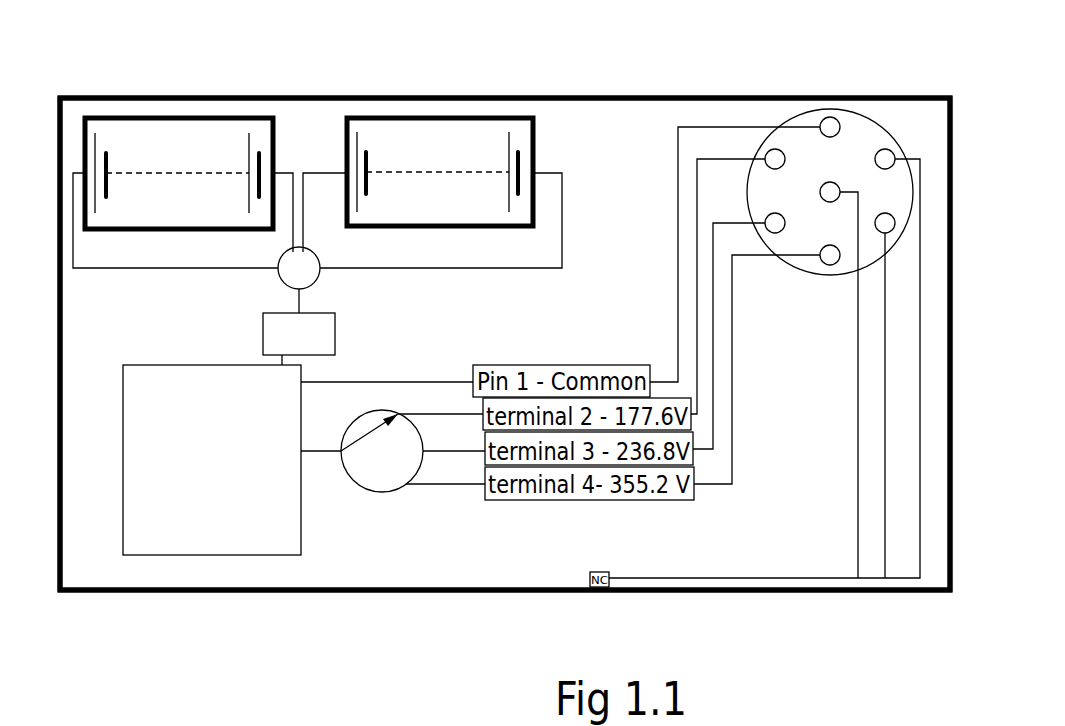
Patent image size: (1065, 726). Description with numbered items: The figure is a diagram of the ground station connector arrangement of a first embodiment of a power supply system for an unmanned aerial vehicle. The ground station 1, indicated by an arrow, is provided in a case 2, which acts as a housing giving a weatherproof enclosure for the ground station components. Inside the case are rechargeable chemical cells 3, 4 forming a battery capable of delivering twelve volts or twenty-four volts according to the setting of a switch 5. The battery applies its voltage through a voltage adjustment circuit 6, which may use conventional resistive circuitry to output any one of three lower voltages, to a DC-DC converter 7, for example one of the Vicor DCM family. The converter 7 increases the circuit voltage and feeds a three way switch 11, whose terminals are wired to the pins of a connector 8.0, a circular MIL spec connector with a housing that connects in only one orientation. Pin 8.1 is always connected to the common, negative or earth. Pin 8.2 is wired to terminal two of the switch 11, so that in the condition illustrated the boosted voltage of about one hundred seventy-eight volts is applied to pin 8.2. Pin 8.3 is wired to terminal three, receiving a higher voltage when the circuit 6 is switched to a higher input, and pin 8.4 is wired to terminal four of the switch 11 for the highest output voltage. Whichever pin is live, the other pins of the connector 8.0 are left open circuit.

The ground station 1 is at (209, 606).
The case 2 is at (367, 592).
The rechargeable chemical cells 3 is at (178, 118).
The rechargeable chemical cells 4 is at (393, 118).
The switch 5 is at (315, 248).
The voltage adjustment circuit 6 is at (335, 335).
The DC-DC converter 7 is at (158, 555).
The connector 8.0 is at (878, 127).
The pin 8.1 is at (828, 116).
The pin 8.2 is at (770, 152).
The pin 8.3 is at (767, 215).
The pin 8.4 is at (822, 263).
The three way switch 11 is at (380, 493).